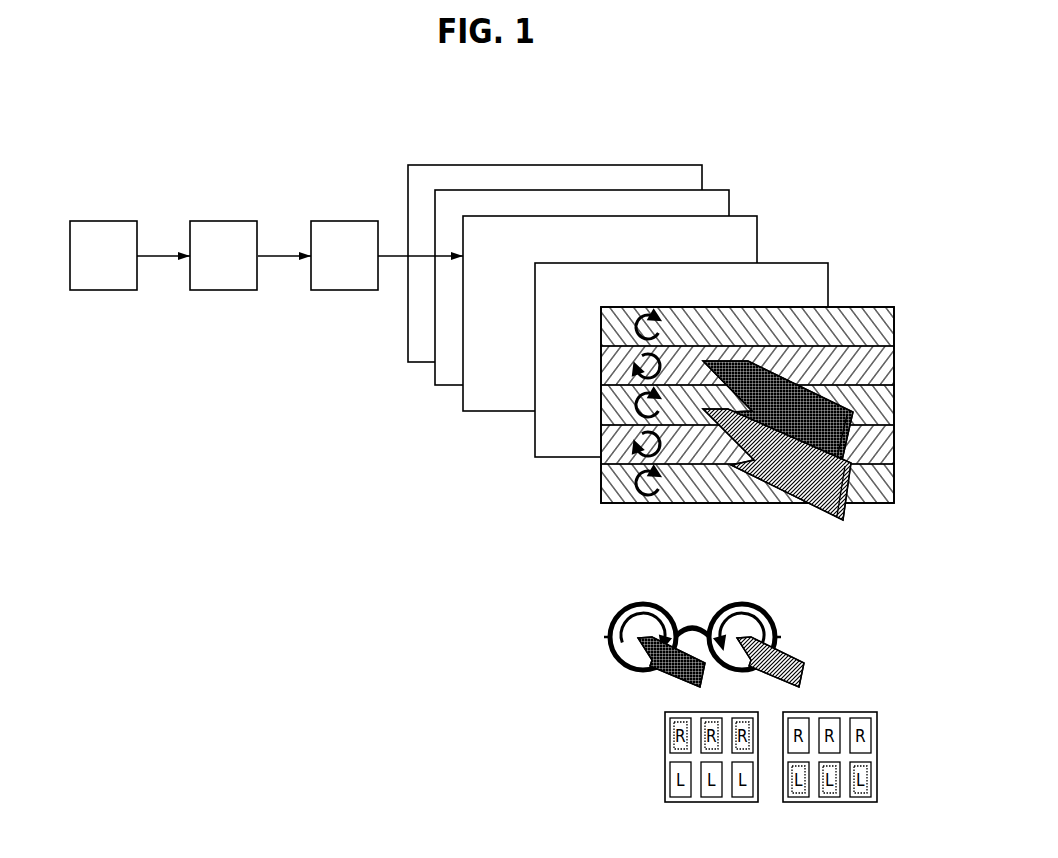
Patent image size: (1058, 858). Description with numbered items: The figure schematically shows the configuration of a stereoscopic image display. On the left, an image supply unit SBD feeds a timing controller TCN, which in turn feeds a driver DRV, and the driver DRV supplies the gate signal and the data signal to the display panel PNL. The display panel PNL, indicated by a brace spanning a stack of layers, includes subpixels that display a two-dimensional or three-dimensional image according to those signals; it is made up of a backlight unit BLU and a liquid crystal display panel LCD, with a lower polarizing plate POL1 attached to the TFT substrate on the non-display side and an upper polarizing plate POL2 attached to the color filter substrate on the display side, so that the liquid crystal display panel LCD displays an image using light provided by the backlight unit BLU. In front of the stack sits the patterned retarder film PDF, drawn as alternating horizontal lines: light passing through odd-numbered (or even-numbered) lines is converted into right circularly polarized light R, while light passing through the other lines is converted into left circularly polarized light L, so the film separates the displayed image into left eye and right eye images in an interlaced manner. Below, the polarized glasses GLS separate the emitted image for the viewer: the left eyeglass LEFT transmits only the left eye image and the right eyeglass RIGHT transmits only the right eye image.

The image supply unit SBD is at (120, 266).
The timing controller TCN is at (241, 266).
The driver DRV is at (362, 266).
The backlight unit BLU is at (694, 163).
The lower polarizing plate POL1 is at (714, 189).
The liquid crystal display panel LCD is at (750, 214).
The upper polarizing plate POL2 is at (797, 261).
The patterned retarder film PDF is at (756, 387).
The display panel PNL is at (893, 247).
The right circularly polarized light R is at (666, 323).
The left circularly polarized light L is at (666, 362).
The polarized glasses GLS is at (772, 618).
The left eyeglass LEFT is at (645, 579).
The right eyeglass RIGHT is at (742, 579).